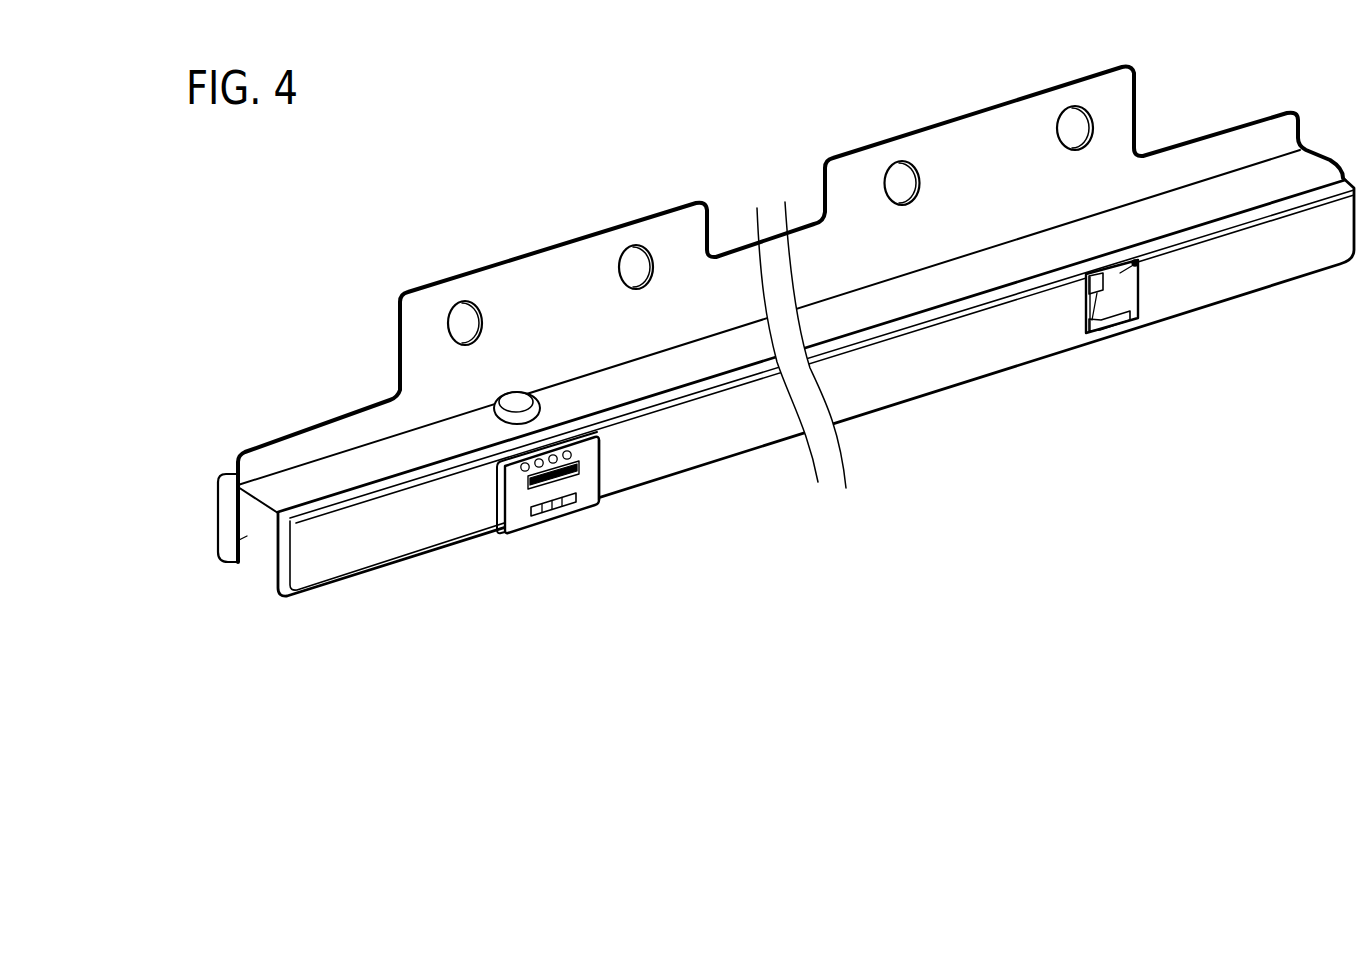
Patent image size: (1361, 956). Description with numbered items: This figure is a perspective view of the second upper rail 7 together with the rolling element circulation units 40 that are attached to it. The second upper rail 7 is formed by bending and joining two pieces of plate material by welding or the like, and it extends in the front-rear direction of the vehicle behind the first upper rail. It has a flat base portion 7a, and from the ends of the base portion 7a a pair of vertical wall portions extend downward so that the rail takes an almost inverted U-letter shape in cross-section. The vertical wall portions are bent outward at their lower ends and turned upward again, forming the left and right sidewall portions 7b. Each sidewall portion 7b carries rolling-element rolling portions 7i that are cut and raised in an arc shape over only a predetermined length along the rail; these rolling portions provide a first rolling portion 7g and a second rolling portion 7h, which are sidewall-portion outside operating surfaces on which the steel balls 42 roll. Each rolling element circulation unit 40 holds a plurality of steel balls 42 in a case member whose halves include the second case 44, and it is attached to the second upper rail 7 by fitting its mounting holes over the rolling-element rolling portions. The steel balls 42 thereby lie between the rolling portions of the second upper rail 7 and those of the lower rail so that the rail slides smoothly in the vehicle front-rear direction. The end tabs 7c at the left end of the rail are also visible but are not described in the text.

The second upper rail 7 is at (610, 224).
The base portion 7a is at (743, 352).
The sidewall portion 7b is at (227, 500).
The end tab of rail 7c is at (220, 558).
The first rolling portion 7g is at (1093, 335).
The second rolling portion 7h is at (1135, 264).
The rolling-element rolling portion 7i is at (552, 473).
The rolling element circulation unit 40 is at (592, 521).
The steel ball 42 is at (542, 482).
The second case 44 is at (587, 488).